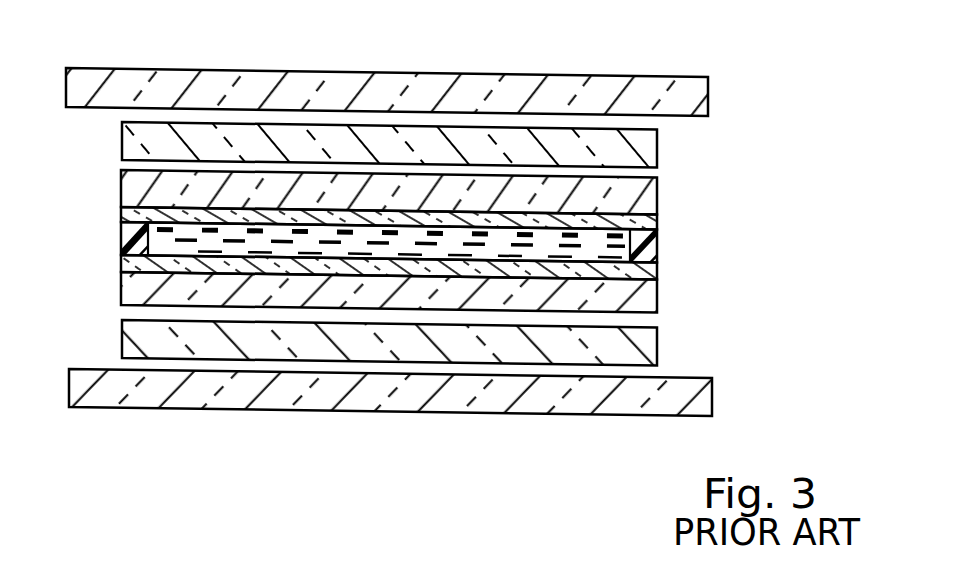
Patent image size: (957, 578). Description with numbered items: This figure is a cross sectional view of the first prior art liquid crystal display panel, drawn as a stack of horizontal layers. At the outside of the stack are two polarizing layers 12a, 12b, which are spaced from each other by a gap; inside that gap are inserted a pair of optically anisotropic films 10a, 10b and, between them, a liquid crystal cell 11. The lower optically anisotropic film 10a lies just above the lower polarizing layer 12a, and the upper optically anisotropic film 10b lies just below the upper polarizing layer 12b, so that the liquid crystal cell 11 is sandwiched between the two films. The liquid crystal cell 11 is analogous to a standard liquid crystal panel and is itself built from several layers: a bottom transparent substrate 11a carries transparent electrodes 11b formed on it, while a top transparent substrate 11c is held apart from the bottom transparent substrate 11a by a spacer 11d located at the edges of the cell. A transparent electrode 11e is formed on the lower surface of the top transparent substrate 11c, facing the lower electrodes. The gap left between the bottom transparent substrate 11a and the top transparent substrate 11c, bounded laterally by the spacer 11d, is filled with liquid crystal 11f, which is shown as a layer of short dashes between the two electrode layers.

The optically anisotropic film 10a is at (135, 332).
The optically anisotropic film 10b is at (125, 140).
The liquid crystal cell 11 is at (430, 219).
The bottom transparent substrate 11a is at (642, 293).
The transparent electrodes 11b is at (647, 270).
The top transparent substrate 11c is at (645, 191).
The spacer 11d is at (121, 240).
The transparent electrode 11e is at (647, 218).
The liquid crystal 11f is at (619, 248).
The polarizing layer 12a is at (70, 407).
The polarizing layer 12b is at (66, 80).